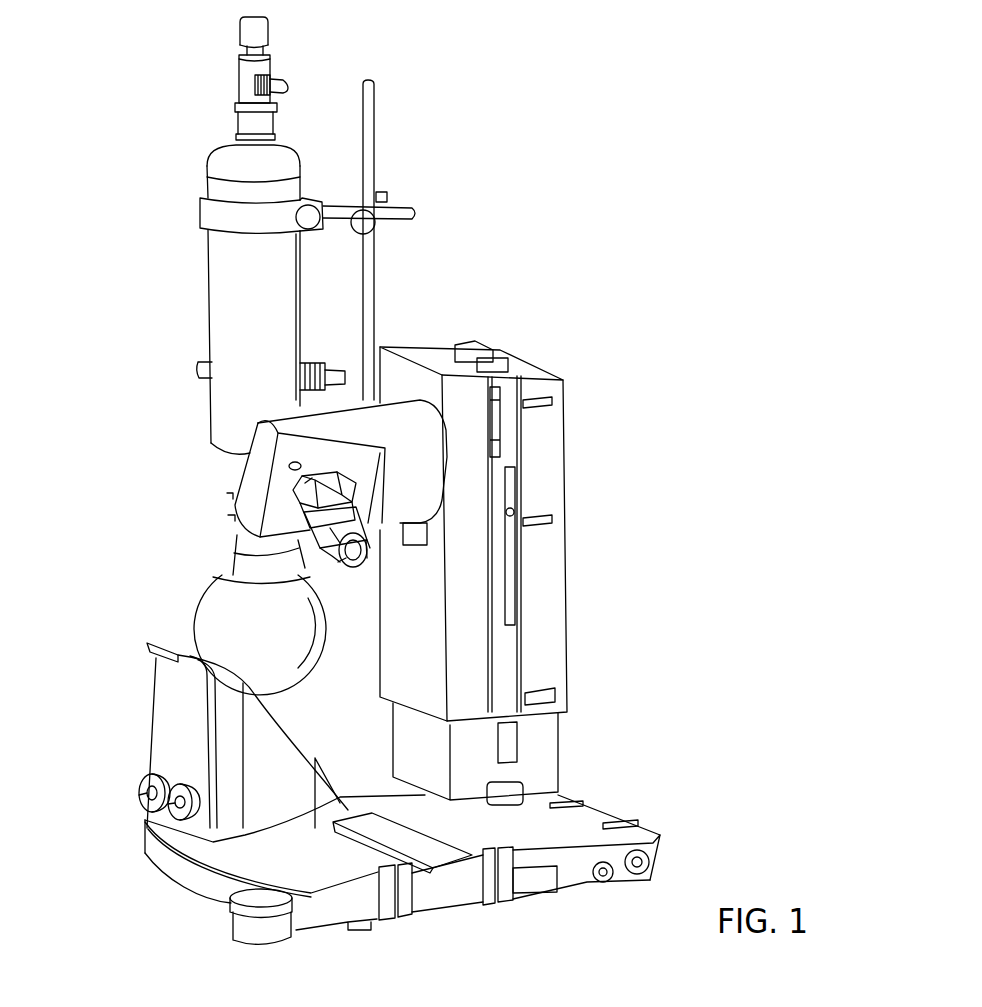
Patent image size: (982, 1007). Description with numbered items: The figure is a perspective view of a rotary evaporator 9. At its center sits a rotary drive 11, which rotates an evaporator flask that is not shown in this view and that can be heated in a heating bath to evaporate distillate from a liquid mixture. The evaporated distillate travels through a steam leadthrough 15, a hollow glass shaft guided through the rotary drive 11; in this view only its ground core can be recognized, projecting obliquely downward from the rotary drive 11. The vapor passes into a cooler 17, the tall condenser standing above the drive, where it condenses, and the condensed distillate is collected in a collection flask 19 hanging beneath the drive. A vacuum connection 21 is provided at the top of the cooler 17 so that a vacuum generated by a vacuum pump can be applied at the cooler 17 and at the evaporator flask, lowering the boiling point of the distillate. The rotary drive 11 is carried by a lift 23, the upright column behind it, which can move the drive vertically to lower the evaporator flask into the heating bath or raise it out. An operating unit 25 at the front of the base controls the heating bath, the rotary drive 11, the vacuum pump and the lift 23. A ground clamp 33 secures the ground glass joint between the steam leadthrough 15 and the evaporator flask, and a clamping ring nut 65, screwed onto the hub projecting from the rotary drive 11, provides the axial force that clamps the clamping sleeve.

The rotary evaporator 9 is at (595, 126).
The rotary drive 11 is at (254, 492).
The steam leadthrough 15 is at (336, 565).
The cooler 17 is at (219, 307).
The collection flask 19 is at (209, 621).
The vacuum connection 21 is at (288, 80).
The lift 23 is at (565, 454).
The operating unit 25 is at (164, 752).
The ground clamp 33 is at (301, 544).
The clamping ring nut 65 is at (303, 482).